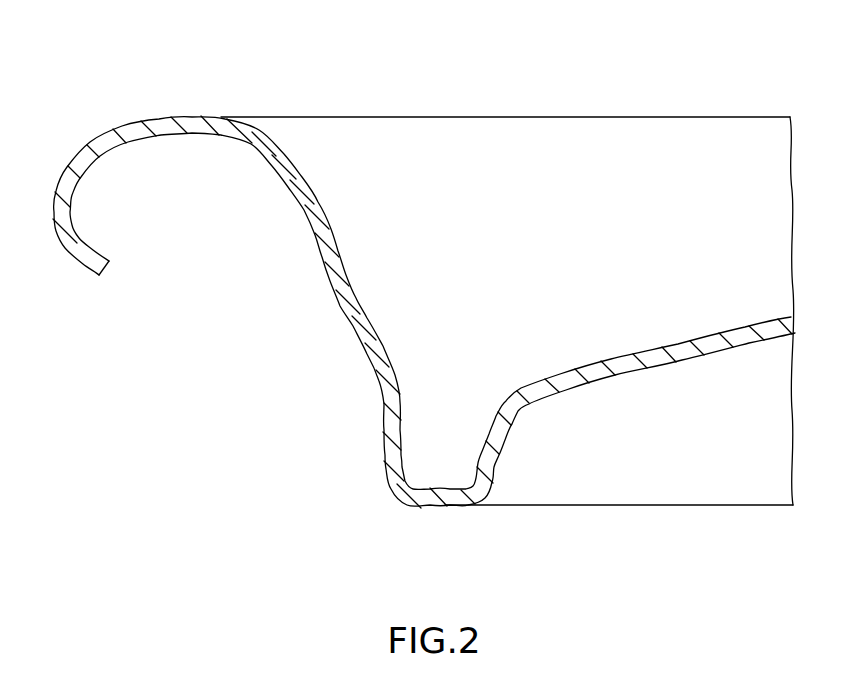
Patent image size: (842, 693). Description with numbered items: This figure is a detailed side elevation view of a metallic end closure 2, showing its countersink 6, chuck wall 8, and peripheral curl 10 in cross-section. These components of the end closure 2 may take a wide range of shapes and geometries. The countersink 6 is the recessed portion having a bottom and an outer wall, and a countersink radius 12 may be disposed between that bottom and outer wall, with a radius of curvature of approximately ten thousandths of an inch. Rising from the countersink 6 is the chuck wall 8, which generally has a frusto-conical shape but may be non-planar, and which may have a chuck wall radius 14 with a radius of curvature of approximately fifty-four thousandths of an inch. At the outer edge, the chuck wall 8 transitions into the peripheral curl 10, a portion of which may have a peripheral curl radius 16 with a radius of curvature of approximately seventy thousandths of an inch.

The end closure 2 is at (567, 85).
The countersink 6 is at (445, 506).
The chuck wall 8 is at (350, 315).
The peripheral curl 10 is at (55, 182).
The countersink radius 12 is at (412, 470).
The chuck wall radius 14 is at (376, 403).
The peripheral curl radius 16 is at (218, 146).